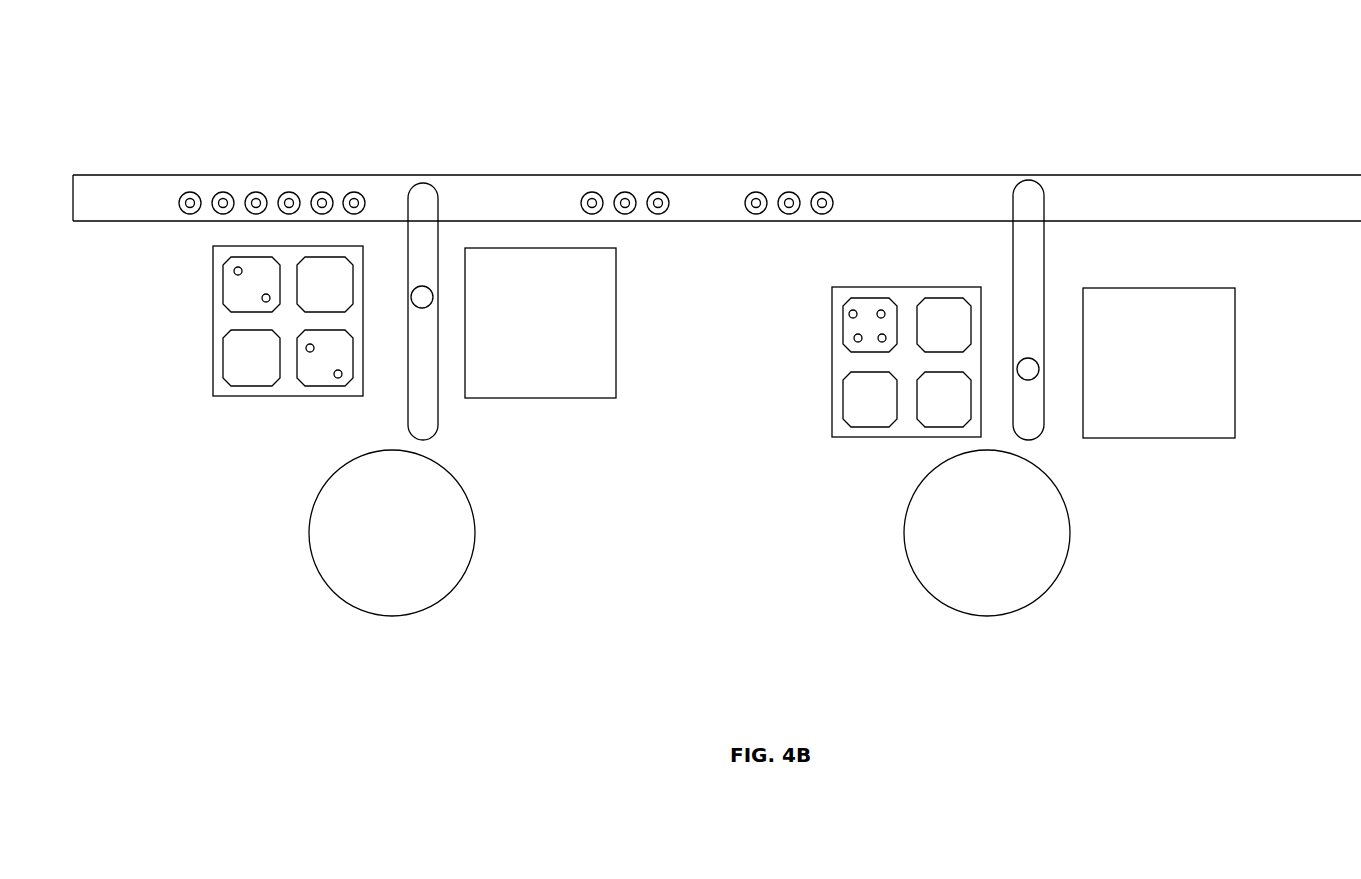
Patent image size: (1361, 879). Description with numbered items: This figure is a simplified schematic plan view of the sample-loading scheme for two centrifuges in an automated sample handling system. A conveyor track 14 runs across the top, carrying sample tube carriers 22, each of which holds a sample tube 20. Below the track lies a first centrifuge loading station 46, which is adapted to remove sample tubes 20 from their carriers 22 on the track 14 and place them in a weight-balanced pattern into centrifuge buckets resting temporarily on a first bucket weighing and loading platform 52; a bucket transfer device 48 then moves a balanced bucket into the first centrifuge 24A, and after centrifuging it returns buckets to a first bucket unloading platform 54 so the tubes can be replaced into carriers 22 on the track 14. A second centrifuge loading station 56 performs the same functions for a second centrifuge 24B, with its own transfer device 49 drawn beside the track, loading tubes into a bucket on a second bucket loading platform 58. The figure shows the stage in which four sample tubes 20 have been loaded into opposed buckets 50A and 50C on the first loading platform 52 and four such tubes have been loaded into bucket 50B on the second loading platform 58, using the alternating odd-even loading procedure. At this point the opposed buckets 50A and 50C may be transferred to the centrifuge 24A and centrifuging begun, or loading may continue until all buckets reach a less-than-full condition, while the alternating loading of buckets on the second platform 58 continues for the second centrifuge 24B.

The track 14 is at (1210, 192).
The sample tube 20 is at (222, 212).
The sample tube carrier 22 is at (256, 193).
The centrifuge 24A is at (475, 555).
The centrifuge 24B is at (1072, 520).
The centrifuge loading station 46 is at (478, 145).
The bucket transfer device 48 is at (422, 190).
The pick arm 49 is at (1028, 186).
The centrifuge bucket 50A is at (225, 305).
The centrifuge bucket 50B is at (836, 346).
The centrifuge bucket 50C is at (345, 355).
The bucket weighing and loading platform 52 is at (213, 270).
The bucket unloading platform 54 is at (616, 293).
The centrifuge loading station 56 is at (965, 82).
The bucket loading platform 58 is at (1235, 333).